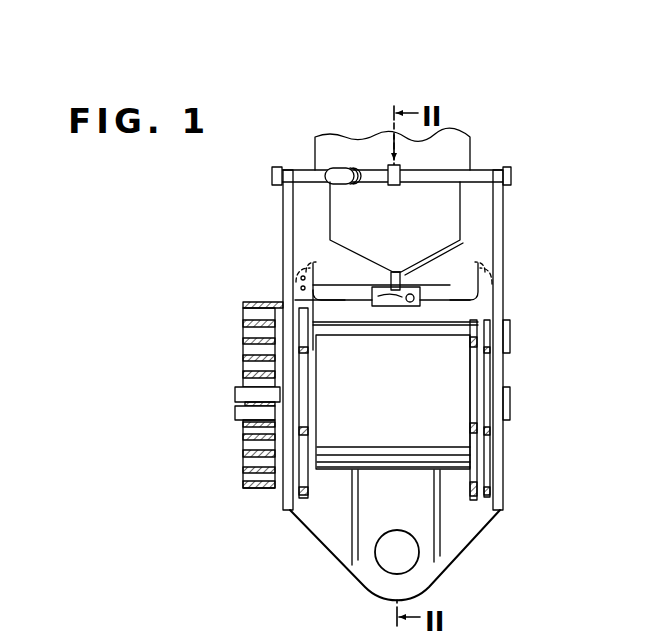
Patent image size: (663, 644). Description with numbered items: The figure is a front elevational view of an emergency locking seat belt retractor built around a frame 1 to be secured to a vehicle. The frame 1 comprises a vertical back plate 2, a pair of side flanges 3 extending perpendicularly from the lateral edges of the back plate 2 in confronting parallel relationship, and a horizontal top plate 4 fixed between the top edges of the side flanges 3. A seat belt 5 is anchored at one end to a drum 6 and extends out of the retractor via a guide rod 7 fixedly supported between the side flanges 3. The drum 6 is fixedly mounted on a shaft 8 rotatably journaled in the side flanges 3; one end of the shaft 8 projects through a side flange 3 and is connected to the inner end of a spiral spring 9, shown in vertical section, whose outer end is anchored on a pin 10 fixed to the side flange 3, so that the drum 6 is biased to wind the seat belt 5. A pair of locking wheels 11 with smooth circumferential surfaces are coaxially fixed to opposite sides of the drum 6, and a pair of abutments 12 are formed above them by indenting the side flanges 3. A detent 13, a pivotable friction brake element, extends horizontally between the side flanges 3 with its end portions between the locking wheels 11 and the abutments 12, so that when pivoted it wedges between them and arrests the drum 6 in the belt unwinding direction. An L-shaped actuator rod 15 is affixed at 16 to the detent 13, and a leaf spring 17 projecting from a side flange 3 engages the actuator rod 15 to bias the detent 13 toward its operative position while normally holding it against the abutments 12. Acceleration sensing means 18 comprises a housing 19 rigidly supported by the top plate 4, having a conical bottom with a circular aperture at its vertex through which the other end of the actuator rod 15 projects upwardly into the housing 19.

The frame 1 is at (513, 171).
The back plate 2 is at (450, 548).
The side flanges 3 is at (285, 497).
The top plate 4 is at (318, 178).
The seat belt 5 is at (456, 151).
The drum 6 is at (477, 410).
The guide rod 7 is at (440, 333).
The shaft 8 is at (510, 392).
The spiral spring 9 is at (243, 372).
The pin 10 is at (245, 309).
The locking wheels 11 is at (305, 477).
The abutments 12 is at (292, 293).
The detent 13 is at (345, 322).
The actuator rod 15 is at (412, 279).
The affixing point 16 is at (420, 300).
The leaf spring 17 is at (366, 322).
The acceleration sensing means 18 is at (407, 224).
The housing 19 is at (430, 247).